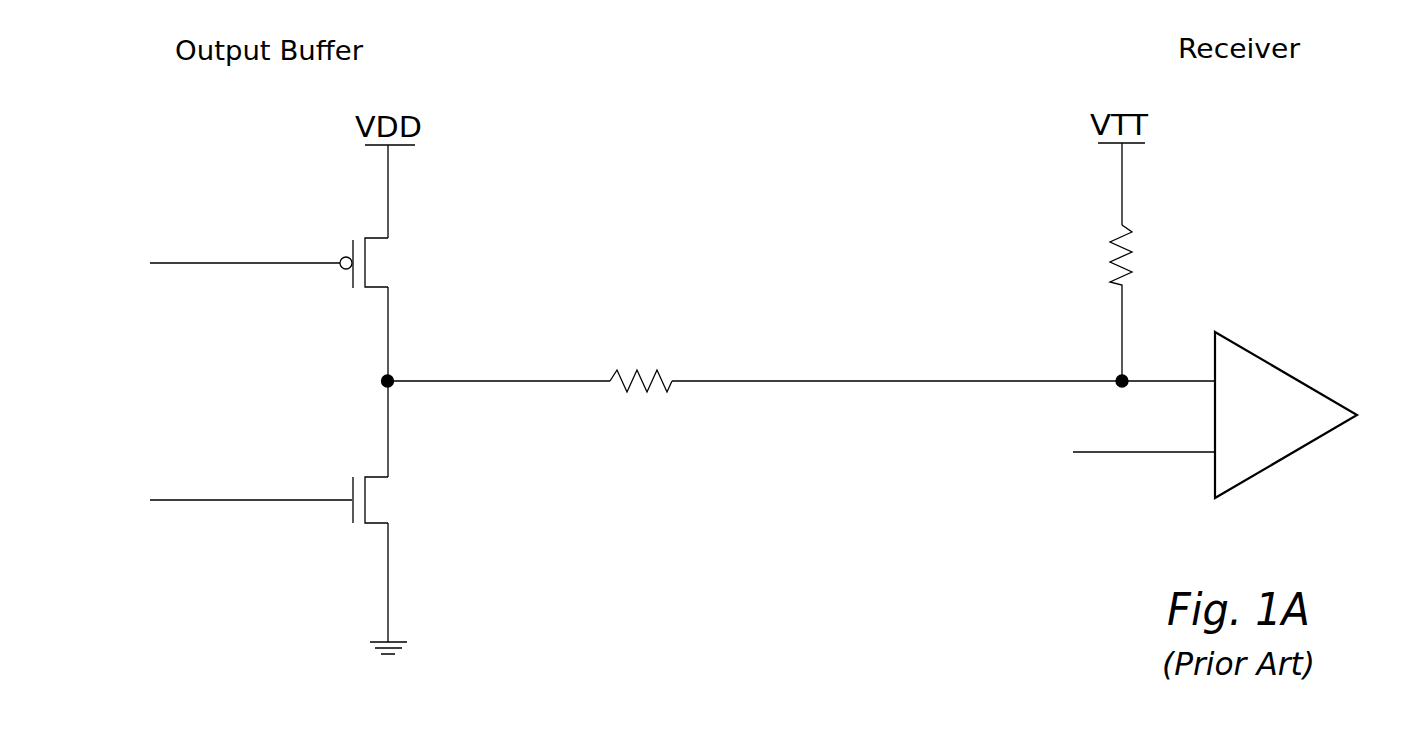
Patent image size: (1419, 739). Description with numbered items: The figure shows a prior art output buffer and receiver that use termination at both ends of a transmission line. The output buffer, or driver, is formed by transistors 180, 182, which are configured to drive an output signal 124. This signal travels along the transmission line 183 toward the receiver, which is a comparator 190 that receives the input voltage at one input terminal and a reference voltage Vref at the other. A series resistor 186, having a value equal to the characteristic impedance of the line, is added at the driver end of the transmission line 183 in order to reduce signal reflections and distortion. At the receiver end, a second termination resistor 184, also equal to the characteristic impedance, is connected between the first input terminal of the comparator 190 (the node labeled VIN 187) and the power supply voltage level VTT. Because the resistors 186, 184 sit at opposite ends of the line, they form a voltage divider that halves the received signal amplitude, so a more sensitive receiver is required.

The transistor 180 is at (377, 263).
The transistor 182 is at (377, 500).
The output signal 124 is at (377, 369).
The transmission line 183 is at (908, 380).
The series resistor 186 is at (660, 392).
The second termination resistor 184 is at (1117, 240).
The receiver input node VIN 187 is at (1117, 377).
The comparator 190 is at (1287, 368).